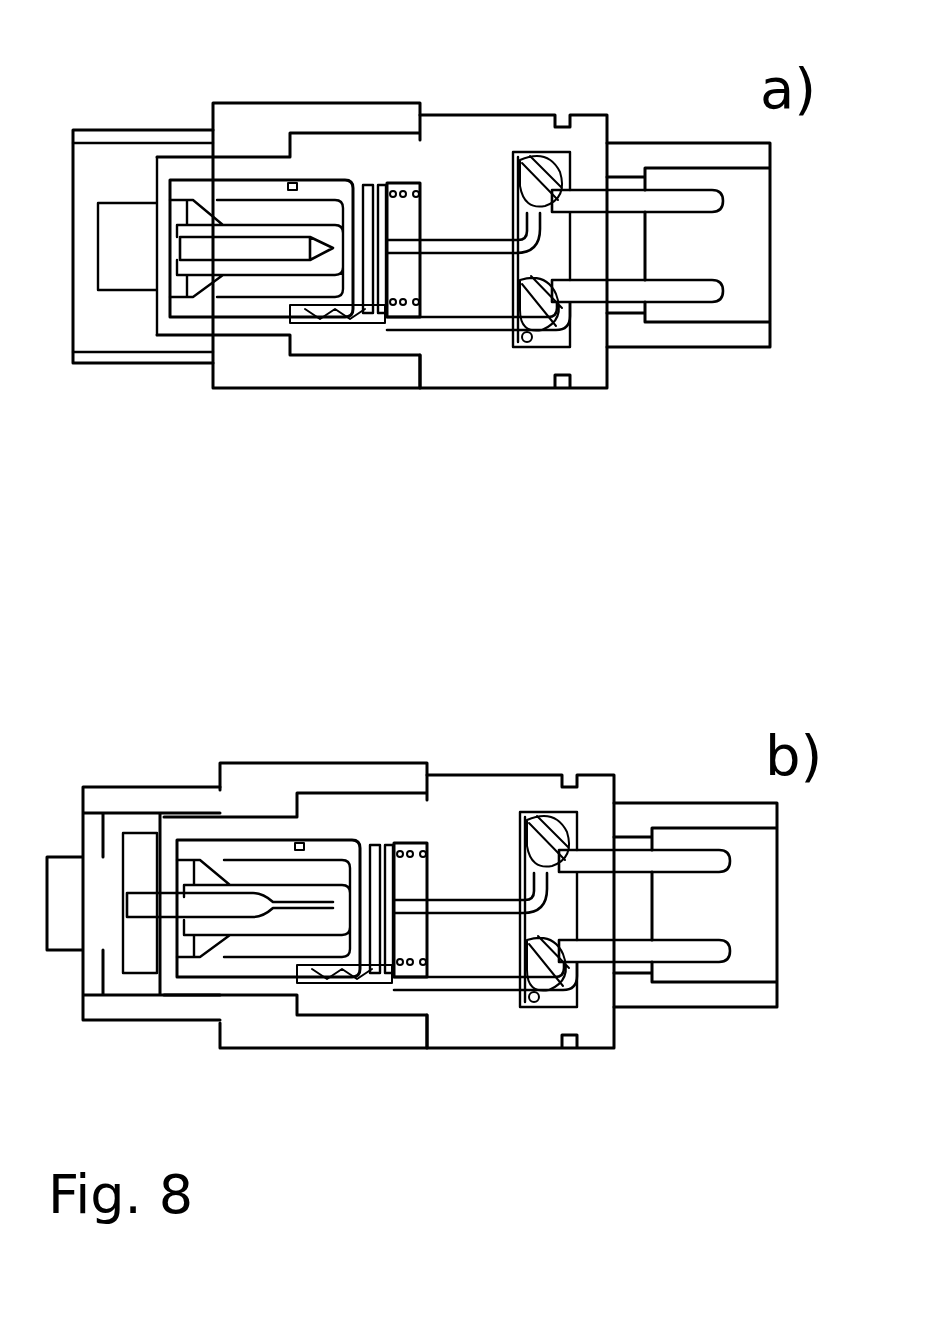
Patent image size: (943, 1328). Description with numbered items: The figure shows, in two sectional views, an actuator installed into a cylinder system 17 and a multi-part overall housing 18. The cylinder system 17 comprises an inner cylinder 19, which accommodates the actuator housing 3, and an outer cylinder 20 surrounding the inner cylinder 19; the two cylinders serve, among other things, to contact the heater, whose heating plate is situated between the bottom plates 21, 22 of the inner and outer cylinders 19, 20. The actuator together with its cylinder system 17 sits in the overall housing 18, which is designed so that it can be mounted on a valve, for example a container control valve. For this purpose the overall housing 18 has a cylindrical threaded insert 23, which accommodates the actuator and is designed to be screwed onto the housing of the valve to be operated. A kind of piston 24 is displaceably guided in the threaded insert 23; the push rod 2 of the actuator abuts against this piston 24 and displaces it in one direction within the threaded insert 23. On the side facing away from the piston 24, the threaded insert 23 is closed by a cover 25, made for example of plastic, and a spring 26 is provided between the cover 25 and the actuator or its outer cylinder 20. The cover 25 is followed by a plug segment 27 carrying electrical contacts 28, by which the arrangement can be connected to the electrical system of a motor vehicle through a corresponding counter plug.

The push rod 2 is at (257, 250).
The housing 3 is at (240, 210).
The cylinder system 17 is at (397, 223).
The overall housing 18 is at (542, 103).
The inner cylinder 19 is at (318, 842).
The outer cylinder 20 is at (385, 840).
The bottom plate 21 is at (375, 965).
The bottom plate 22 is at (423, 863).
The threaded insert 23 is at (305, 118).
The piston 24 is at (153, 317).
The cover 25 is at (512, 792).
The spring 26 is at (412, 965).
The plug segment 27 is at (750, 1002).
The electrical contacts 28 is at (700, 292).